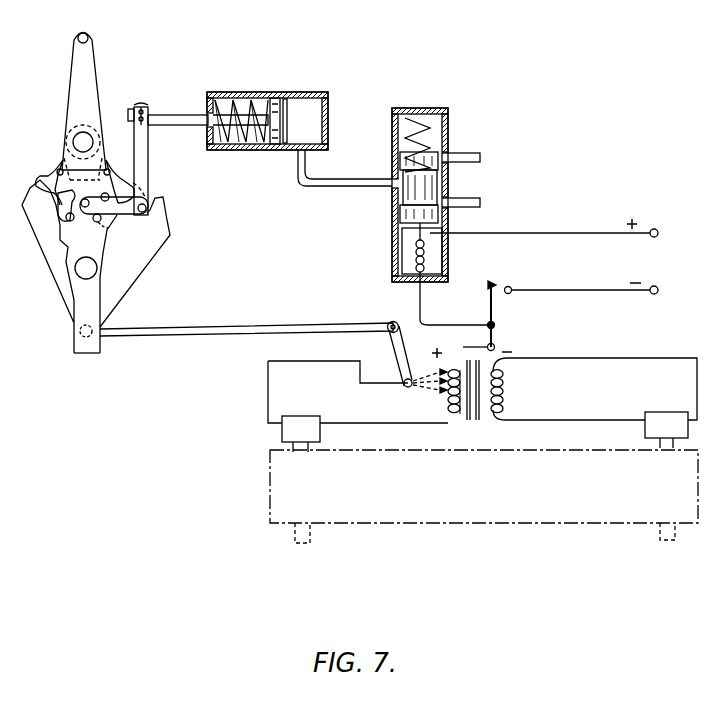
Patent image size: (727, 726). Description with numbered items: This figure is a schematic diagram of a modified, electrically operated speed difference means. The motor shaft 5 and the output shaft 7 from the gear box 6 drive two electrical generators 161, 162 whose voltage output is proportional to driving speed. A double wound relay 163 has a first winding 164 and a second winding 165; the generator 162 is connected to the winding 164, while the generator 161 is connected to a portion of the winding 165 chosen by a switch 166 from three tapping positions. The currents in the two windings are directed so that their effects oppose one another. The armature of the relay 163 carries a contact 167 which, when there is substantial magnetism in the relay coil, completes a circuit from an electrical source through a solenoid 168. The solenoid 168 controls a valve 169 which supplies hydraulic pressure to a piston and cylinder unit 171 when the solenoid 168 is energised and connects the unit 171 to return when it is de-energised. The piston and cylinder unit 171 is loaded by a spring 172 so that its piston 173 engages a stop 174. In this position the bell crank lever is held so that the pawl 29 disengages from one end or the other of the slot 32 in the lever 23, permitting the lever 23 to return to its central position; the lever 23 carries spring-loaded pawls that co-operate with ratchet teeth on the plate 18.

The lever 23 is at (75, 108).
The slot 32 is at (70, 217).
The pawl 29 is at (86, 210).
The plate 18 is at (135, 277).
The piston and cylinder unit 171 is at (222, 150).
The spring 172 is at (225, 100).
The piston 173 is at (277, 100).
The stop 174 is at (286, 140).
The valve 169 is at (448, 180).
The solenoid 168 is at (421, 242).
The contact 167 is at (495, 289).
The switch 166 is at (430, 372).
The second winding 165 is at (448, 408).
The first winding 164 is at (505, 380).
The double wound relay 163 is at (473, 422).
The electrical generator 162 is at (661, 420).
The electrical generator 161 is at (297, 420).
The gear box 6 is at (533, 510).
The motor shaft 5 is at (295, 527).
The output shaft 7 is at (672, 530).